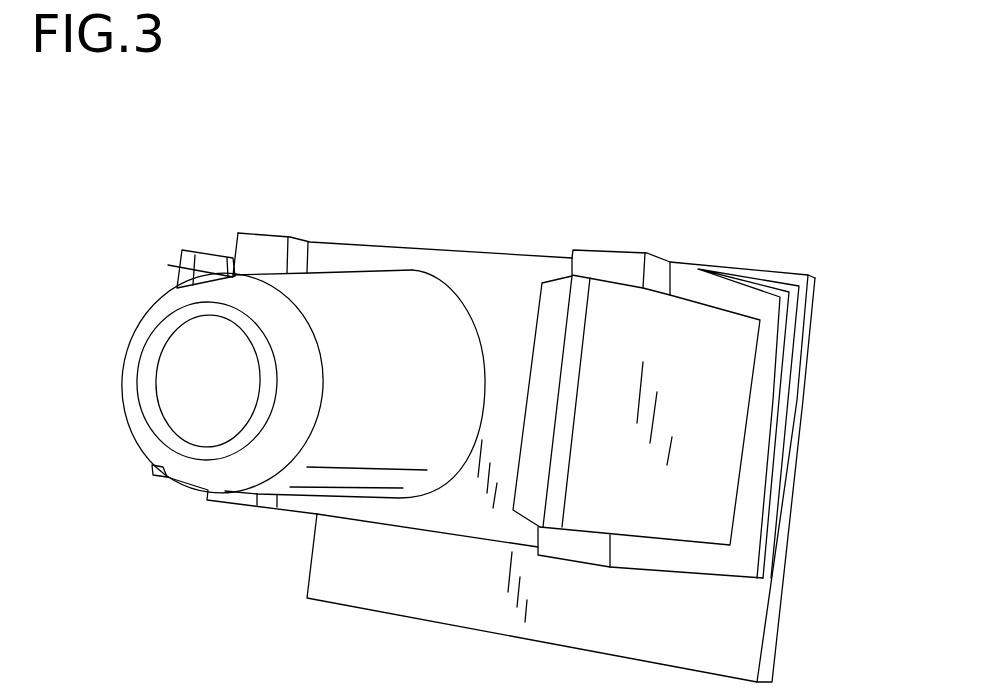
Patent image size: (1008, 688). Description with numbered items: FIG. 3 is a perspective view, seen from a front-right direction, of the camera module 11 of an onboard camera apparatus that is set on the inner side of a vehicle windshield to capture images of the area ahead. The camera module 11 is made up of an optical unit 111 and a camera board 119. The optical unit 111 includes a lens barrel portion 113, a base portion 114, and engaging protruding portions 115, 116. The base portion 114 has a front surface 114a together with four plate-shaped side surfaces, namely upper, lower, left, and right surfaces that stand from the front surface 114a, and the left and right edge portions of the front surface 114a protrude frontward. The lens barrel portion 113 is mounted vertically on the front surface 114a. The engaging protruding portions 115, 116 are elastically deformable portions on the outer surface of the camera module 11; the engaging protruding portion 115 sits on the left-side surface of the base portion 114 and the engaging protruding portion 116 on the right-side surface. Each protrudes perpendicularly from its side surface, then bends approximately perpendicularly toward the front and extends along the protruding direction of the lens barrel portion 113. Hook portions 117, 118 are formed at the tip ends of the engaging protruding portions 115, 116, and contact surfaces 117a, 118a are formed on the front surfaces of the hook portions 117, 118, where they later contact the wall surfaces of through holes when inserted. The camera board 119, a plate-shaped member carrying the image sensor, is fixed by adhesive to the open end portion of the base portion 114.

The camera module 11 is at (229, 213).
The optical unit 111 is at (273, 202).
The lens barrel portion 113 is at (352, 316).
The base portion 114 is at (441, 252).
The front surface 114a is at (483, 302).
The engaging protruding portion 115 is at (210, 250).
The engaging protruding portion 116 is at (675, 264).
The hook portion 117 is at (188, 260).
The contact surface 117a is at (178, 282).
The hook portion 118 is at (585, 282).
The contact surface 118a is at (548, 295).
The camera board 119 is at (795, 494).